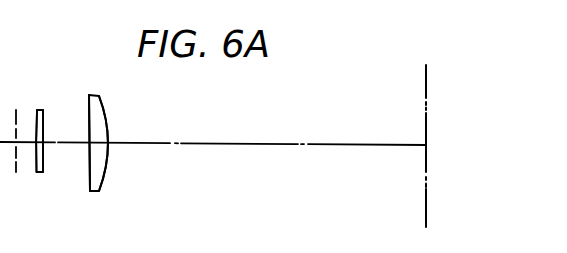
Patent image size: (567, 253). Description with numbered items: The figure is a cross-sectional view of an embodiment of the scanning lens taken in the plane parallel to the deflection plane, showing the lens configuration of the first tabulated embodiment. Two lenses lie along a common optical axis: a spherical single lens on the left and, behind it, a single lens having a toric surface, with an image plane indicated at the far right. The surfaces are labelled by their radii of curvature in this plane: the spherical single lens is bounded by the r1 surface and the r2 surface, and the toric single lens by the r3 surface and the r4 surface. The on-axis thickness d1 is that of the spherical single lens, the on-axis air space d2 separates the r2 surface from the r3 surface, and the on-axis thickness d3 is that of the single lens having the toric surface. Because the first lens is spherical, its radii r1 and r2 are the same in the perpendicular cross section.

The on-axis thickness of the spherical single lens d1 is at (37, 132).
The on-axis air space d2 is at (74, 137).
The on-axis thickness of the single lens having the toric surface d3 is at (101, 138).
The radius of curvature of the first surface r1 is at (35, 168).
The radius of curvature of the second surface r2 is at (45, 168).
The radius of curvature of the third surface r3 is at (87, 178).
The radius of curvature of the fourth surface r4 is at (109, 172).